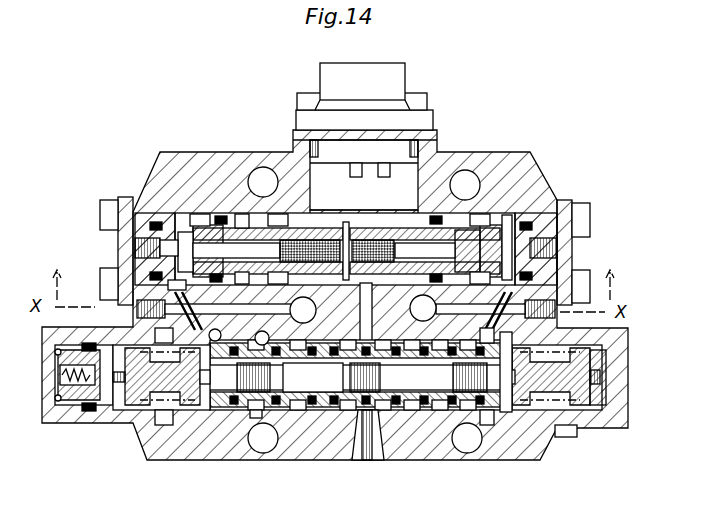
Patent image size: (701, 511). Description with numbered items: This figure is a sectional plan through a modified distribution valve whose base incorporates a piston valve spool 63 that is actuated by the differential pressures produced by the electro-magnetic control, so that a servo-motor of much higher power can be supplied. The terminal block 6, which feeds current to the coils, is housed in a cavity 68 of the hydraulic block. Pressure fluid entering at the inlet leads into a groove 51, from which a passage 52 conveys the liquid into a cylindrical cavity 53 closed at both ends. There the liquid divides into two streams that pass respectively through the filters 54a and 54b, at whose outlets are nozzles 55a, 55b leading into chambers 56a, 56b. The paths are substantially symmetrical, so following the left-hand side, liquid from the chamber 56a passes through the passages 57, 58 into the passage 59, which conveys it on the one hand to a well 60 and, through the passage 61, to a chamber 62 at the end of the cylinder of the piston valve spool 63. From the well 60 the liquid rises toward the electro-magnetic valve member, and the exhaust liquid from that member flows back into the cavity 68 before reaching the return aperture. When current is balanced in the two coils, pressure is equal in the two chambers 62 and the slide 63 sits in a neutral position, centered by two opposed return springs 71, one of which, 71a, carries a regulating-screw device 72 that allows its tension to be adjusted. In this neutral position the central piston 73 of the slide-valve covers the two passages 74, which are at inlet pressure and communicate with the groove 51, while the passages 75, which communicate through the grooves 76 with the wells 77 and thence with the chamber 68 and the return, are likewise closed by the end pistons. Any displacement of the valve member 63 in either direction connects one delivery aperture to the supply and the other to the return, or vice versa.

The terminal block 6 is at (353, 78).
The groove 51 is at (357, 418).
The passage 52 is at (348, 235).
The cylindrical cavity 53 is at (293, 222).
The filter 54a is at (258, 240).
The filter 54b is at (400, 238).
The nozzle 55a is at (193, 230).
The nozzle 55b is at (475, 230).
The chamber 56a is at (113, 240).
The chamber 56b is at (543, 197).
The passage 57 is at (175, 251).
The passage 58 is at (180, 290).
The passage 59 is at (222, 258).
The well 60 is at (363, 309).
The passage 61 is at (173, 318).
The chamber 62 is at (158, 385).
The piston valve spool 63 is at (354, 375).
The cavity 68 is at (364, 204).
The return spring 71 is at (570, 445).
The return spring 71a is at (138, 397).
The regulating-screw device 72 is at (58, 375).
The central piston 73 is at (375, 420).
The passage 74 is at (378, 343).
The passage 75 is at (313, 378).
The groove 76 is at (253, 413).
The well 77 is at (220, 340).